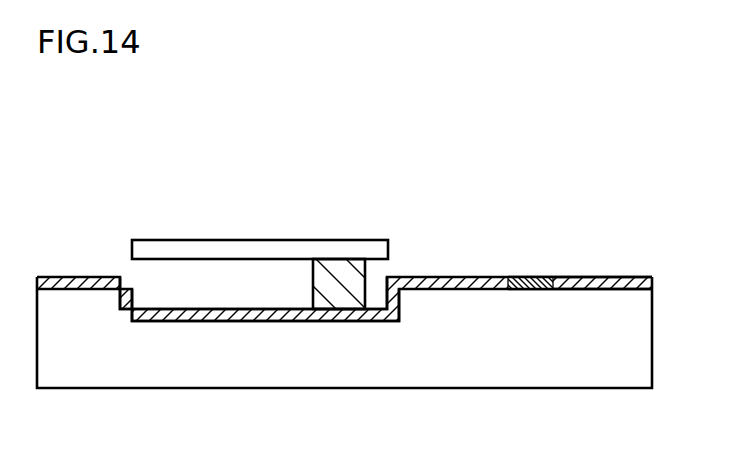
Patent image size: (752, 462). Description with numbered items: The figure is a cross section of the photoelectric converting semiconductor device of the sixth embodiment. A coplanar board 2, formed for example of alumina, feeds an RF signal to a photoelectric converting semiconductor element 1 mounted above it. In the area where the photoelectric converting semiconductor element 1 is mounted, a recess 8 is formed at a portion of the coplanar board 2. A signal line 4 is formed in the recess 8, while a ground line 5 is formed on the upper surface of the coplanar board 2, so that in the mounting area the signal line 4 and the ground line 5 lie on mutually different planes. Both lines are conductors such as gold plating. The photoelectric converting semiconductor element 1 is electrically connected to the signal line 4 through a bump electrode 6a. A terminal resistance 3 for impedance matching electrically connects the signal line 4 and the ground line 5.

The photoelectric converting semiconductor element 1 is at (243, 250).
The coplanar board 2 is at (618, 336).
The terminal resistance 3 is at (533, 277).
The signal line 4 is at (443, 277).
The ground line 5 is at (600, 277).
The bump electrode 6a is at (342, 279).
The recess 8 is at (395, 310).